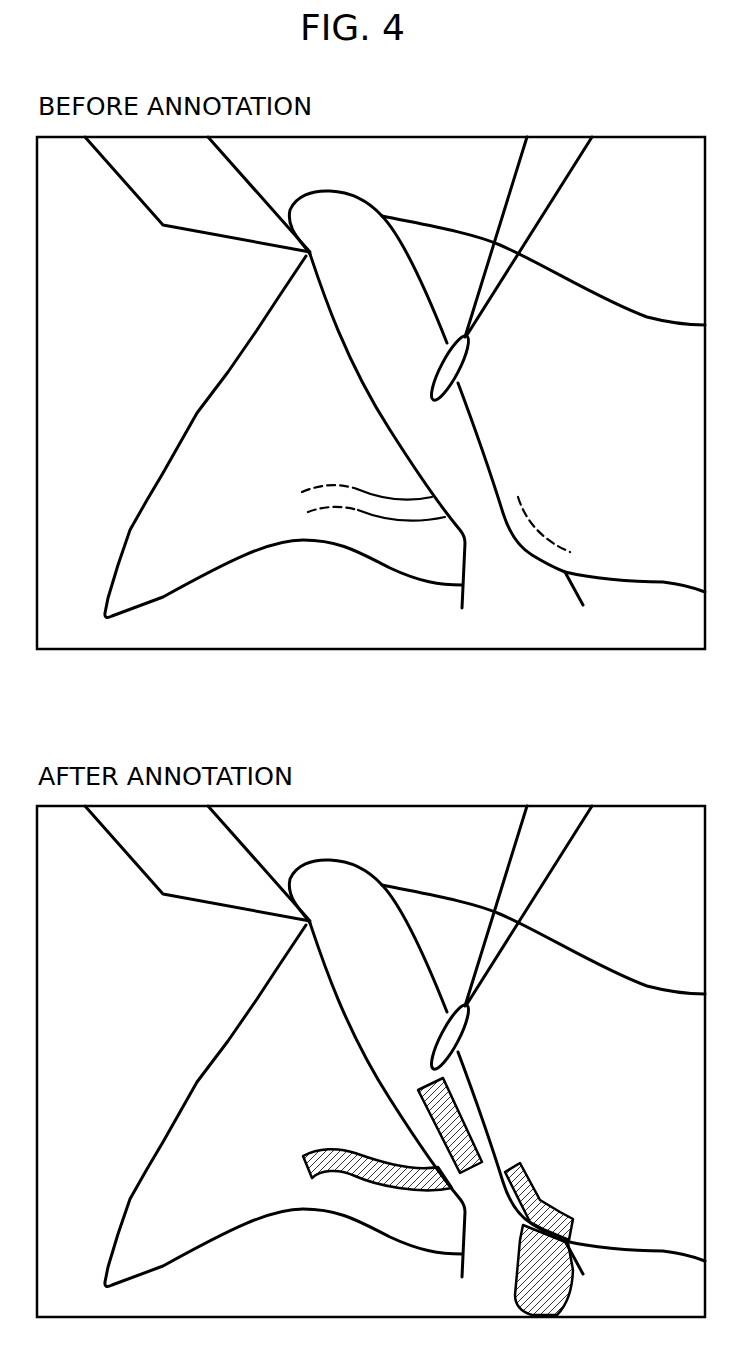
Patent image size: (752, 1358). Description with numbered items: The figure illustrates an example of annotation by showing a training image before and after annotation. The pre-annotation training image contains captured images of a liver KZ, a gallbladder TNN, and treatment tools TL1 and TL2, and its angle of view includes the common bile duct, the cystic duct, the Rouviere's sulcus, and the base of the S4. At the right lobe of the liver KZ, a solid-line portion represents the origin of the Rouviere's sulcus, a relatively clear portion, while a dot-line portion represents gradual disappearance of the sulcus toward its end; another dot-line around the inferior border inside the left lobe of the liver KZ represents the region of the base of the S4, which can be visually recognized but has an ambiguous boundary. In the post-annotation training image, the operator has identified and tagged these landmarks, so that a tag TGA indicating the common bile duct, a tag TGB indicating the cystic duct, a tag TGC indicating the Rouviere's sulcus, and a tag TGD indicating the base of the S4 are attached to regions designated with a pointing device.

The treatment tool TL1 is at (195, 232).
The treatment tool TL2 is at (568, 187).
The gallbladder TNN is at (360, 197).
The liver KZ is at (197, 415).
The tag indicating the common bile duct TGA is at (580, 1287).
The tag indicating the cystic duct TGB is at (423, 1112).
The tag indicating the Rouviere's sulcus TGC is at (370, 1190).
The tag indicating the base of the S4 TGD is at (540, 1188).